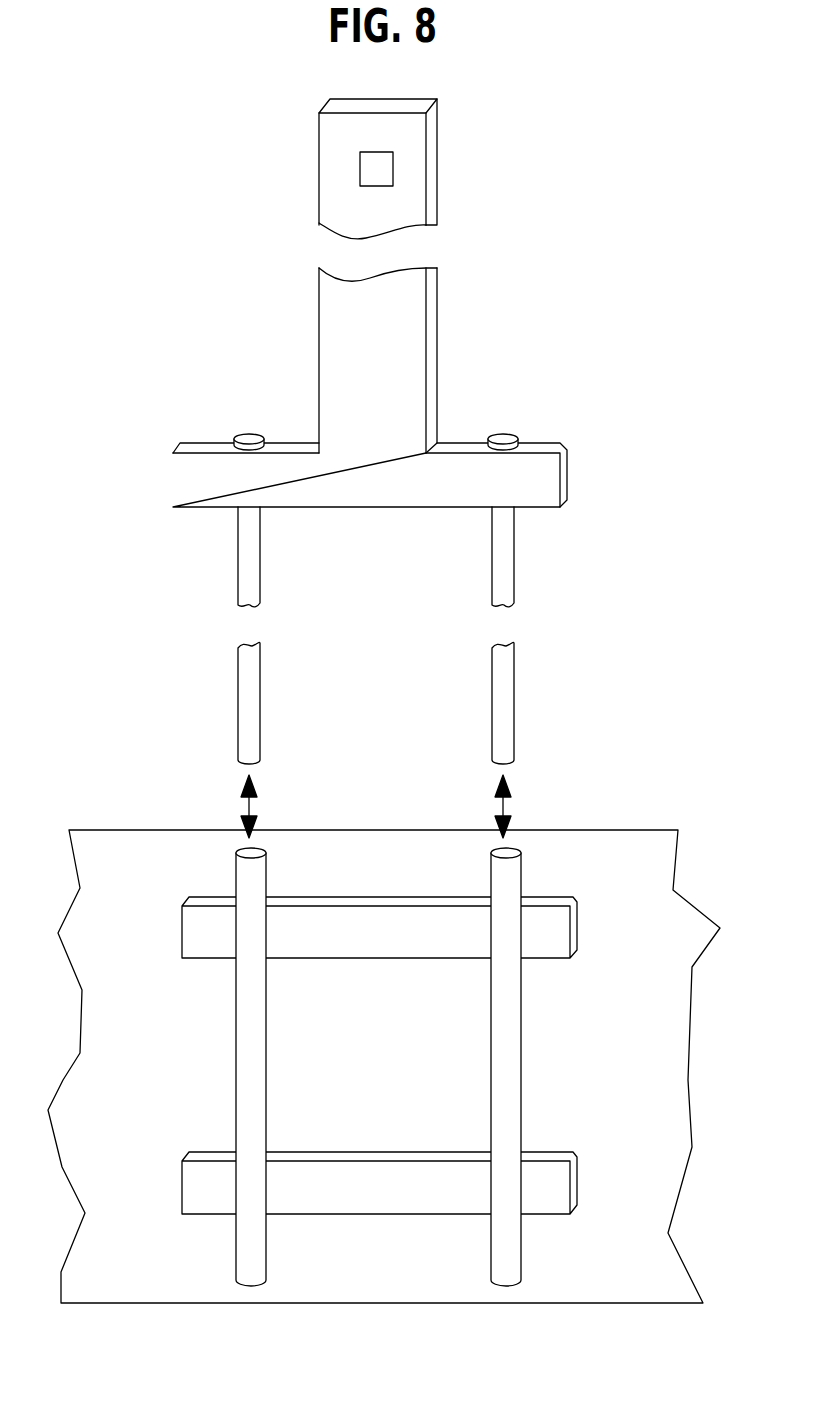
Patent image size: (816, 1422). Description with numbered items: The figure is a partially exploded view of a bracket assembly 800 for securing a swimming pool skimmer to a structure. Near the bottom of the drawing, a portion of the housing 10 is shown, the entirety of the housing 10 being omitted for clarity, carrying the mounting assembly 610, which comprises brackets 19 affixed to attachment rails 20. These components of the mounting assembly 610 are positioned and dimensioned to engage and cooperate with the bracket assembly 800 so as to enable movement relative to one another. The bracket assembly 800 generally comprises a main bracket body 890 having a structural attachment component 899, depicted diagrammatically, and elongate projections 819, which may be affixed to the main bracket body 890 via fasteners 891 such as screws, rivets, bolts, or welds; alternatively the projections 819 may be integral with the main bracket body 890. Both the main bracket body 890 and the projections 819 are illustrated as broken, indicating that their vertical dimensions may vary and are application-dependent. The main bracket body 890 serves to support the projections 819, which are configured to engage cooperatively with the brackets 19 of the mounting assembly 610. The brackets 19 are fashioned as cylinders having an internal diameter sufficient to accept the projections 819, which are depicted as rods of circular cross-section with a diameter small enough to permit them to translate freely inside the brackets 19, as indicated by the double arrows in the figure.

The bracket assembly 800 is at (512, 166).
The main bracket body 890 is at (395, 344).
The structural attachment component 899 is at (372, 167).
The fasteners 891 is at (249, 433).
The elongate projections 819 is at (249, 697).
The mounting assembly 610 is at (408, 858).
The housing 10 is at (170, 1081).
The attachment rails 20 is at (388, 946).
The brackets 19 is at (262, 1071).